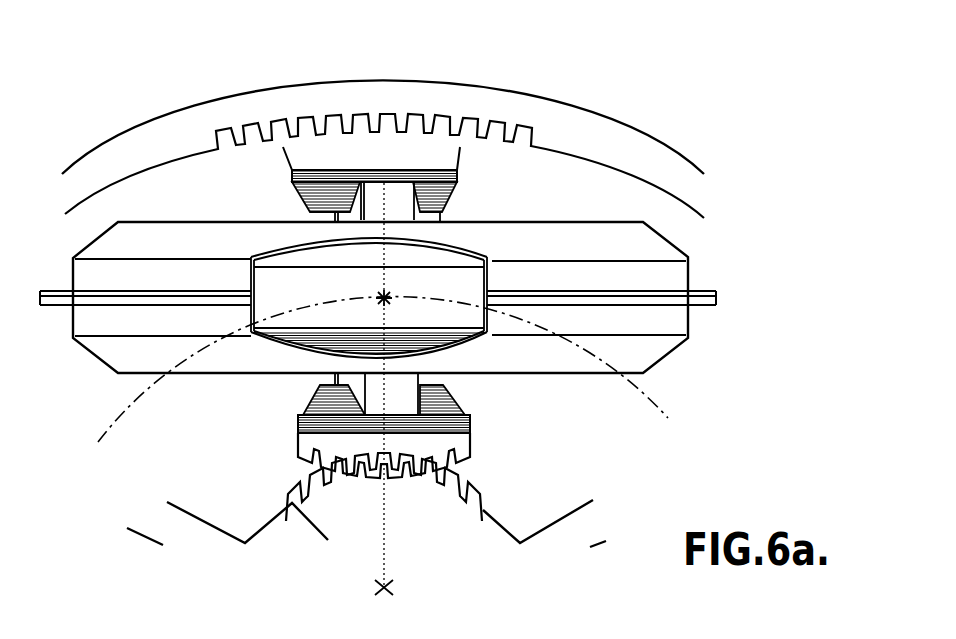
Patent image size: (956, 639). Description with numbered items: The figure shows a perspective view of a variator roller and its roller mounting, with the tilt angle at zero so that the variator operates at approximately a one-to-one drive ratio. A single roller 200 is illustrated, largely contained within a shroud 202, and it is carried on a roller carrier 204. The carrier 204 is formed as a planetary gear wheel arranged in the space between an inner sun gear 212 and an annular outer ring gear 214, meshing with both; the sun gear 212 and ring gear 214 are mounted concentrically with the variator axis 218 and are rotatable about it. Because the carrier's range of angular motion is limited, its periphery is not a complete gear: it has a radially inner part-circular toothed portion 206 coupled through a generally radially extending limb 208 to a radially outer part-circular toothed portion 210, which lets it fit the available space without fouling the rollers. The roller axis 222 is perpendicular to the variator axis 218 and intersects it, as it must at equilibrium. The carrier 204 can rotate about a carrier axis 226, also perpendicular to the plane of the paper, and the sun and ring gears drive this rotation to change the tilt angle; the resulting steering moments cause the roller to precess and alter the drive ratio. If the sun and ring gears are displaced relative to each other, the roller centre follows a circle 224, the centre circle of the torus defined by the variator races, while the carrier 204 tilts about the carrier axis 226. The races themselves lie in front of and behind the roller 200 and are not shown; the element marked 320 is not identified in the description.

The roller 200 is at (447, 265).
The shroud 202 is at (689, 268).
The roller carrier 204 is at (495, 448).
The radially inner part-circular toothed portion 206 is at (300, 412).
The generally radially extending limb 208 is at (418, 411).
The radially outer part-circular toothed portion 210 is at (287, 176).
The inner sun gear 212 is at (290, 498).
The annular outer ring gear 214 is at (430, 98).
The variator axis 218 is at (392, 583).
The roller axis 222 is at (335, 238).
The circle 224 is at (661, 412).
The carrier axis 226 is at (388, 294).
The lens 320 is at (302, 326).